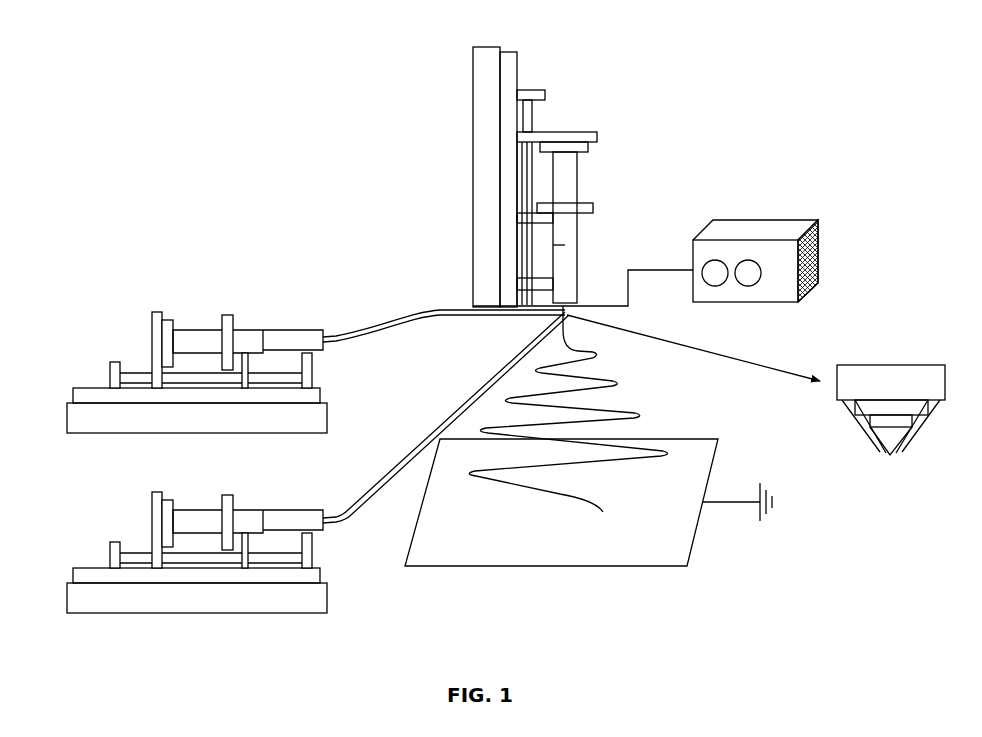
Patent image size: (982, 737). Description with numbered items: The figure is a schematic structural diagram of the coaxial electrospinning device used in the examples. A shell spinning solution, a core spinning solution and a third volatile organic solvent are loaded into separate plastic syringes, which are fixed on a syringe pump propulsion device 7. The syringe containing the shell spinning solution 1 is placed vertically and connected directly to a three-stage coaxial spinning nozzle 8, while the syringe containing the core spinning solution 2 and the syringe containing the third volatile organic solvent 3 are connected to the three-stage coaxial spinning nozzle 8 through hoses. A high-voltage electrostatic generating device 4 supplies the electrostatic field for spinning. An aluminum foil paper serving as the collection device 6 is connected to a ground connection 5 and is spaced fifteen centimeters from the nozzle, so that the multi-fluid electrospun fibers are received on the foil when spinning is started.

The syringe containing a shell spinning solution 1 is at (577, 270).
The syringe containing a core spinning solution 2 is at (293, 330).
The syringe containing a third volatile organic solvent 3 is at (293, 510).
The high-voltage electrostatic generating device 4 is at (767, 220).
The ground connection 5 is at (772, 535).
The collection device 6 is at (545, 566).
The injection pump propulsion device 7 is at (512, 52).
The three-stage coaxial spinning nozzle 8 is at (756, 385).